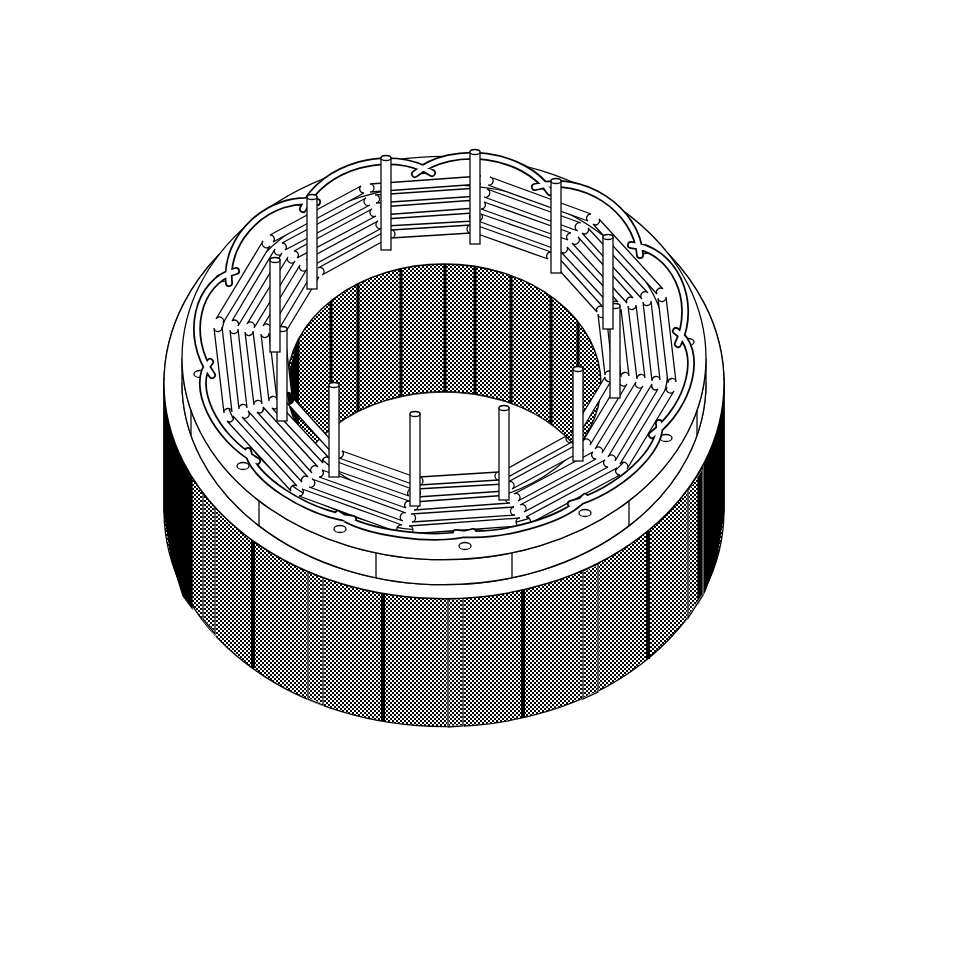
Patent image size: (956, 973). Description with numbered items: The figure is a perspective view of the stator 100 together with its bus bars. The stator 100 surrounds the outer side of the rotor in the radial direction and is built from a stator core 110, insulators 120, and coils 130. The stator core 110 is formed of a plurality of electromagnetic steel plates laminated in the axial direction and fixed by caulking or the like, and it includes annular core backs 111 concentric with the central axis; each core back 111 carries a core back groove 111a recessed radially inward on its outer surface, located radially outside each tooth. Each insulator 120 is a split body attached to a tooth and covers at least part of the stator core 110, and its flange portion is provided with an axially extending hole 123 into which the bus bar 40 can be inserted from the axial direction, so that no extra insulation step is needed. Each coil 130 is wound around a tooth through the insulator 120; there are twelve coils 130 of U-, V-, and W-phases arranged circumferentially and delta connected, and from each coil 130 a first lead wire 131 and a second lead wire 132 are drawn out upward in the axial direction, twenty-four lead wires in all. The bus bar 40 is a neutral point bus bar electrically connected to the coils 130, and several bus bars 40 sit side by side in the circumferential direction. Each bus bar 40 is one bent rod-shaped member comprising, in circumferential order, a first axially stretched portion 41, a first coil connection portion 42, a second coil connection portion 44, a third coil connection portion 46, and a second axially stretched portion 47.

The stator 100 is at (203, 157).
The stator core 110 is at (704, 286).
The core back 111 is at (683, 462).
The core back groove 111a is at (158, 383).
The insulator 120 is at (648, 640).
The hole 123 is at (548, 690).
The coil 130 is at (680, 352).
The first lead wire 131 is at (493, 168).
The second lead wire 132 is at (463, 143).
The bus bar 40 is at (543, 200).
The first axially stretched portion 41 is at (690, 327).
The first coil connection portion 42 is at (640, 296).
The second coil connection portion 44 is at (590, 245).
The third coil connection portion 46 is at (522, 165).
The second axially stretched portion 47 is at (428, 150).